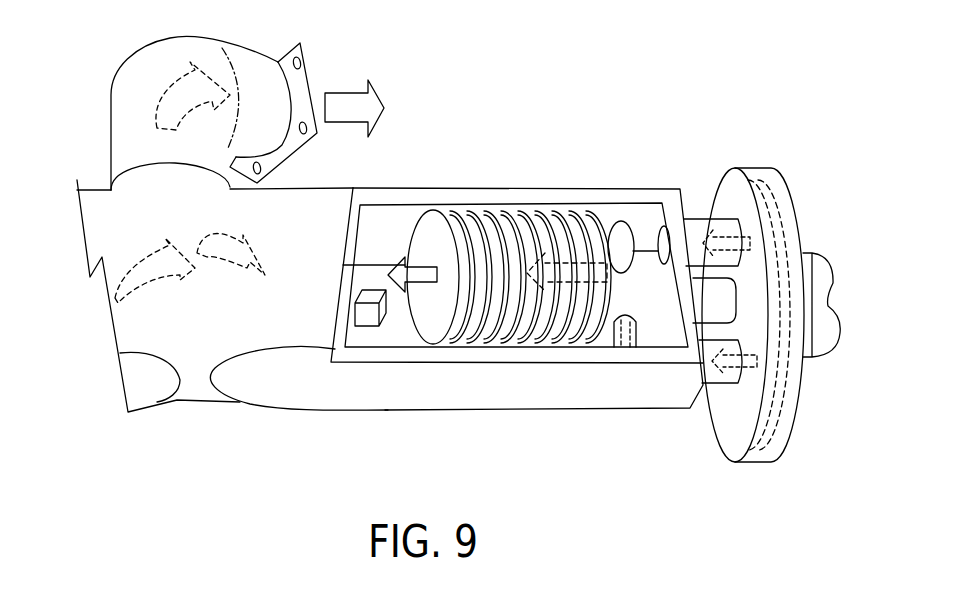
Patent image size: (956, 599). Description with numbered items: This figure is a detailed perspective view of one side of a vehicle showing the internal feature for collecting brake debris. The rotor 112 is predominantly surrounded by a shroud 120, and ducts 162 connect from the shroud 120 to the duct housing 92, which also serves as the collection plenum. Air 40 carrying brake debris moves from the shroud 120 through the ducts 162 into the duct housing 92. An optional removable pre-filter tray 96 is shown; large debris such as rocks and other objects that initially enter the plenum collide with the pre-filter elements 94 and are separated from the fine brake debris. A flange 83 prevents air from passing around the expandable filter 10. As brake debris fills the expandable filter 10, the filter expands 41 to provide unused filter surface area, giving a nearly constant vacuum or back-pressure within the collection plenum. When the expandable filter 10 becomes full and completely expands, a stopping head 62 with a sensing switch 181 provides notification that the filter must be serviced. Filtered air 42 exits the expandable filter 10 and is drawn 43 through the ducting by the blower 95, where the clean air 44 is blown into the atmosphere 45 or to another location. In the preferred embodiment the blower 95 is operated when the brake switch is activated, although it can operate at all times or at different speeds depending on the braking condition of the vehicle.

The expandable filter 10 is at (480, 292).
The air with brake debris 40 is at (709, 218).
The filter expansion 41 is at (537, 257).
The filtered air 42 is at (422, 280).
The air drawn through ducting 43 is at (247, 257).
The clean air 44 is at (173, 91).
The atmosphere 45 is at (333, 93).
The stopping head 62 is at (381, 300).
The flange 83 is at (628, 308).
The duct housing 92 is at (468, 410).
The pre-filter elements 94 is at (629, 222).
The blower 95 is at (110, 90).
The pre-filter tray 96 is at (645, 262).
The rotor 112 is at (777, 213).
The shroud 120 is at (751, 323).
The ducts 162 is at (707, 217).
The sensing switch 181 is at (366, 327).